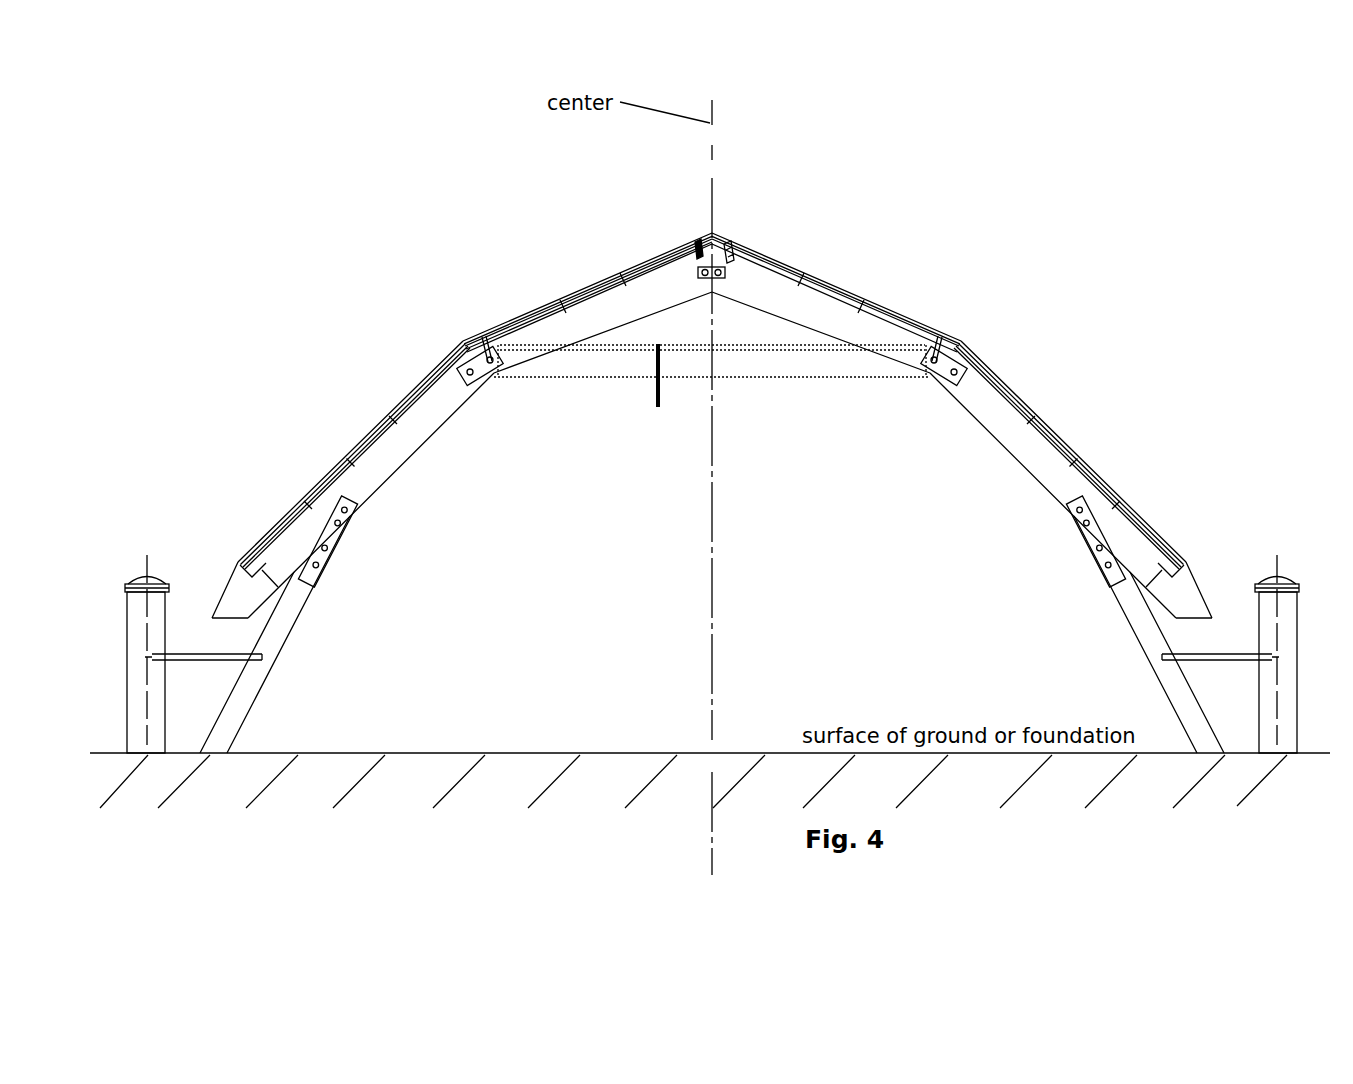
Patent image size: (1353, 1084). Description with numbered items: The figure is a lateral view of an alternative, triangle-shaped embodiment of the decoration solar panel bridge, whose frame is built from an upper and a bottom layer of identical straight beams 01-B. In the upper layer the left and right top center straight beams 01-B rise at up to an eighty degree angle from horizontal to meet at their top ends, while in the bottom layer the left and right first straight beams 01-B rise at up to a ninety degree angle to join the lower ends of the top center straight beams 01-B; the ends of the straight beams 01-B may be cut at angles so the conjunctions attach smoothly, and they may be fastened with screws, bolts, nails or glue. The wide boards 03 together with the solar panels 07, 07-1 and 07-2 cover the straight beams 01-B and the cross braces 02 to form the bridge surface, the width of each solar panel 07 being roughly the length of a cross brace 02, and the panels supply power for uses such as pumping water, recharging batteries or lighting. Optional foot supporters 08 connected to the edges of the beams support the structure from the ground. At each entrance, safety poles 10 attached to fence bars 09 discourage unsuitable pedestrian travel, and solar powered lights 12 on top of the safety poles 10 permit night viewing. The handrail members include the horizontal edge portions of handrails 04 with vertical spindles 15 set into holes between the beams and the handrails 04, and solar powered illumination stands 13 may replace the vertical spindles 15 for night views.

The straight beam 01-B is at (552, 332).
The cross brace member 02 is at (483, 337).
The wide board 03 is at (378, 443).
The edge portion of handrail 04 is at (613, 277).
The solar panel 07 is at (737, 343).
The solar panel 07-1 is at (898, 325).
The solar panel 07-2 is at (987, 372).
The foot supporter 08 is at (1130, 590).
The fence bar 09 is at (1225, 653).
The safety pole 10 is at (1267, 627).
The solar powered light 12 is at (1283, 573).
The solar powered illumination stand 13 is at (697, 247).
The vertical spindle of handrail 15 is at (697, 247).